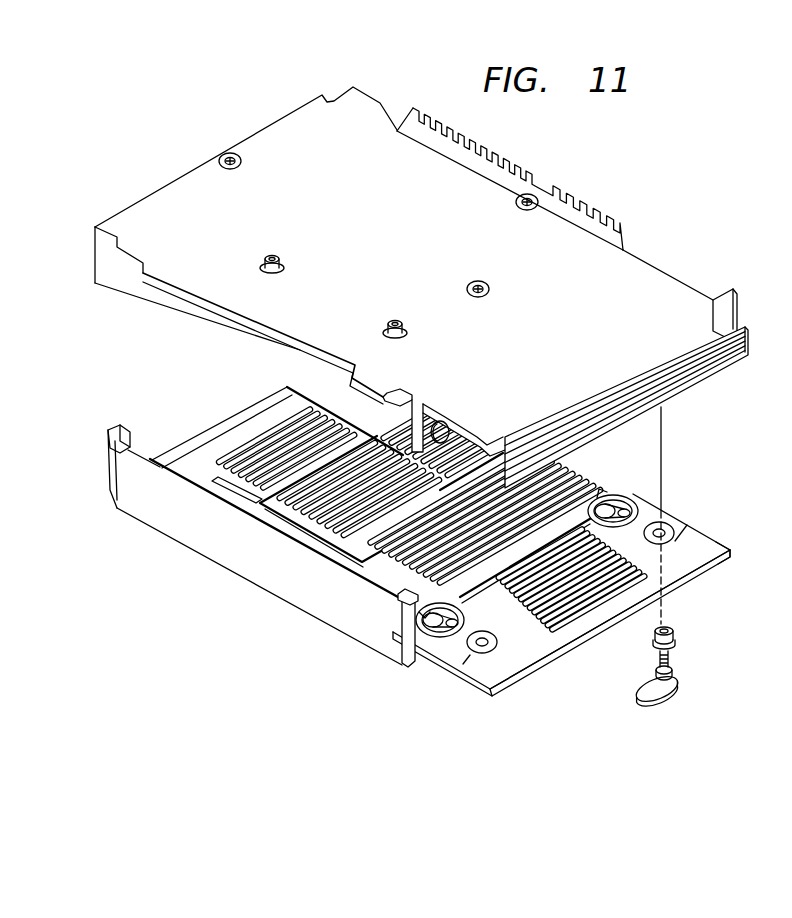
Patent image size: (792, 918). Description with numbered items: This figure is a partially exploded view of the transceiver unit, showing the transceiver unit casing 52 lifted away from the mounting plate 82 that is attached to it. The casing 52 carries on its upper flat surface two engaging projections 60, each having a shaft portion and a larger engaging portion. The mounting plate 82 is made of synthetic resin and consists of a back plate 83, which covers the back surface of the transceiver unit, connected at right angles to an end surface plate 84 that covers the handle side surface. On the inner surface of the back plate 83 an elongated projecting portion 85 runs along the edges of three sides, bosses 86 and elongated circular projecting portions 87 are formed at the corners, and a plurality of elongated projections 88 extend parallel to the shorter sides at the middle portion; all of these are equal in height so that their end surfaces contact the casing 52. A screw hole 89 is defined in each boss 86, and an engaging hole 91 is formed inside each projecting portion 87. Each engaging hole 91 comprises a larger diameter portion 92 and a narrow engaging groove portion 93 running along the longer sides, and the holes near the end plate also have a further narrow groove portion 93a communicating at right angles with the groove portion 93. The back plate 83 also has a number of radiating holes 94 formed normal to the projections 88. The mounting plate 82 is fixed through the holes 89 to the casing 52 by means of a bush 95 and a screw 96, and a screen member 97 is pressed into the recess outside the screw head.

The transceiver unit casing 52 is at (421, 287).
The engaging projection 60 is at (266, 264).
The mounting plate 82 is at (543, 584).
The back plate 83 is at (620, 623).
The end surface plate 84 is at (187, 538).
The elongated projecting portion 85 is at (725, 540).
The boss 86 is at (683, 538).
The elongated circular projecting portion 87 is at (602, 490).
The elongated projection 88 is at (495, 575).
The screw hole 89 is at (667, 530).
The engaging hole 91 is at (504, 574).
The larger diameter portion 92 is at (638, 512).
The engaging groove portion 93 is at (613, 500).
The engaging groove portion 93a is at (418, 620).
The radiating holes 94 is at (572, 612).
The bush 95 is at (672, 632).
The screw 96 is at (673, 660).
The screen member 97 is at (680, 683).